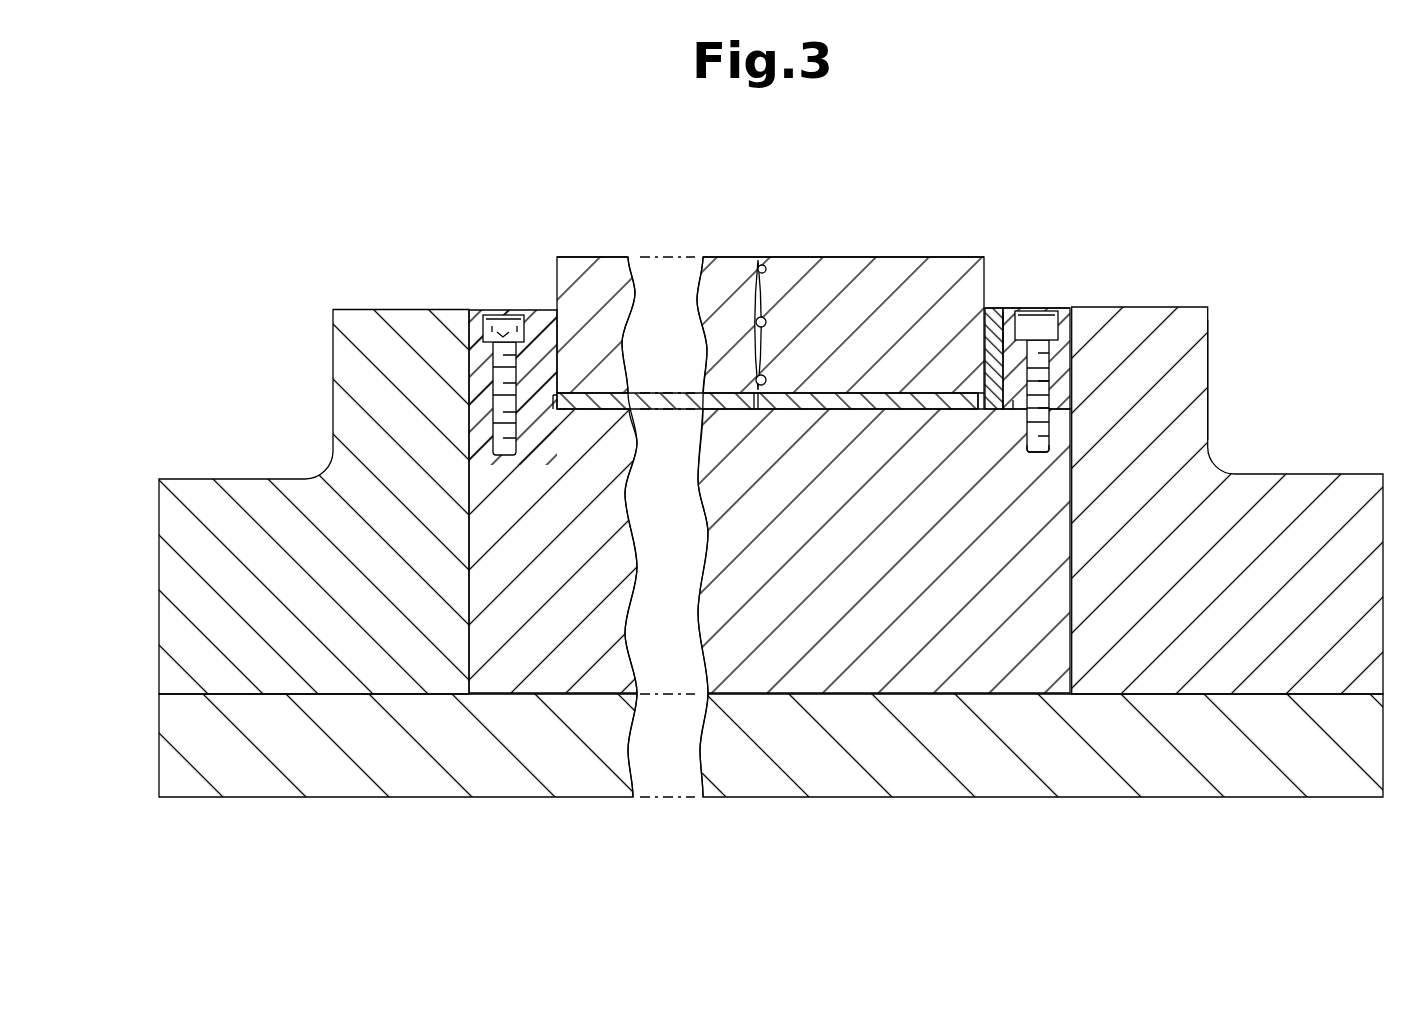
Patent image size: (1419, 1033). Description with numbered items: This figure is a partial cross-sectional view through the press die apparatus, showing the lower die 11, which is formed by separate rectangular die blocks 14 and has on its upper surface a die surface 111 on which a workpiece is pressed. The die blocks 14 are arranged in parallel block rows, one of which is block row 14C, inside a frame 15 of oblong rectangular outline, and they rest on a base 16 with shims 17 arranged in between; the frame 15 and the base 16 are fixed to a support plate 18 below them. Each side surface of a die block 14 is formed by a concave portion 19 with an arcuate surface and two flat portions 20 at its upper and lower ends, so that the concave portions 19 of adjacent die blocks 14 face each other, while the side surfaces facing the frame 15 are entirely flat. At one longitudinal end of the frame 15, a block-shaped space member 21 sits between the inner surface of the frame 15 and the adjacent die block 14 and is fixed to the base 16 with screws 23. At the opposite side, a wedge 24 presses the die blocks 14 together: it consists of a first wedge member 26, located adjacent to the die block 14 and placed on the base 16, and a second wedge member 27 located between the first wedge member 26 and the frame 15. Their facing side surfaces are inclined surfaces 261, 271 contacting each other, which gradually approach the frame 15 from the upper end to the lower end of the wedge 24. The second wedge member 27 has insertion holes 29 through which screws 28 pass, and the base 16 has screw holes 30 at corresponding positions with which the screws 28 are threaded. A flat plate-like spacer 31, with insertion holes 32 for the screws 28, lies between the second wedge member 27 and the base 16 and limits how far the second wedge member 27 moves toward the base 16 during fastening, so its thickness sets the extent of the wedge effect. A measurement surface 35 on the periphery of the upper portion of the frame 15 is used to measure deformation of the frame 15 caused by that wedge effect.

The lower die 11 is at (577, 258).
The die surface 111 is at (940, 257).
The die block 14 is at (783, 257).
The block row 14C is at (732, 233).
The frame 15 is at (1163, 307).
The base 16 is at (762, 694).
The shim 17 is at (787, 410).
The support plate 18 is at (760, 797).
The concave portion 19 is at (756, 322).
The flat portion 20 is at (756, 270).
The space member 21 is at (477, 310).
The screw 23 is at (497, 312).
The wedge 24 is at (1140, 252).
The first wedge member 26 is at (995, 306).
The inclined surface 261 is at (1000, 323).
The second wedge member 27 is at (1038, 306).
The inclined surface 271 is at (1005, 338).
The screw 28 is at (1040, 378).
The insertion hole 29 is at (1048, 388).
The screw hole 30 is at (1048, 450).
The spacer 31 is at (1012, 411).
The insertion hole 32 is at (1030, 410).
The measurement surface 35 is at (1208, 343).